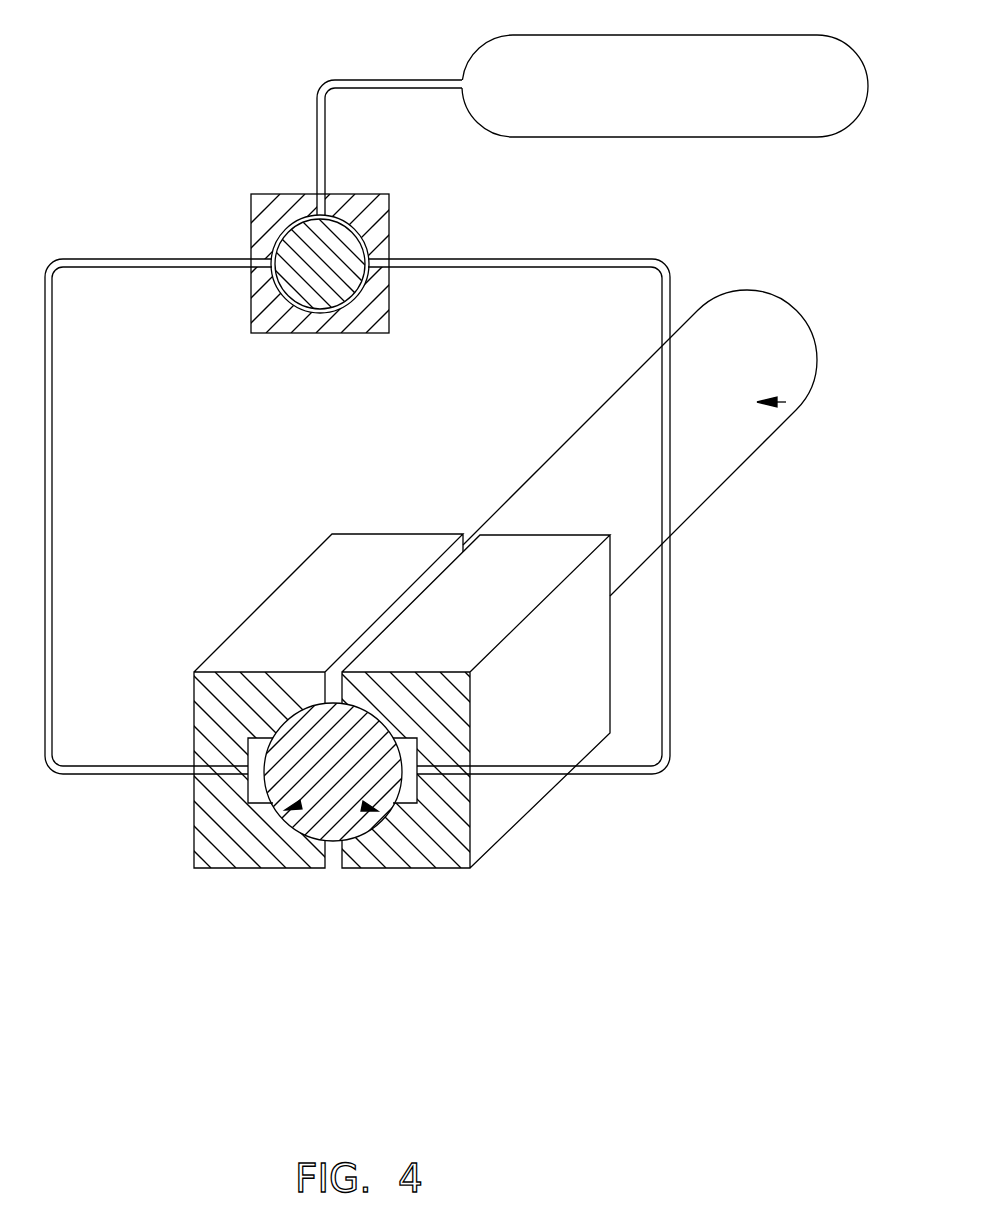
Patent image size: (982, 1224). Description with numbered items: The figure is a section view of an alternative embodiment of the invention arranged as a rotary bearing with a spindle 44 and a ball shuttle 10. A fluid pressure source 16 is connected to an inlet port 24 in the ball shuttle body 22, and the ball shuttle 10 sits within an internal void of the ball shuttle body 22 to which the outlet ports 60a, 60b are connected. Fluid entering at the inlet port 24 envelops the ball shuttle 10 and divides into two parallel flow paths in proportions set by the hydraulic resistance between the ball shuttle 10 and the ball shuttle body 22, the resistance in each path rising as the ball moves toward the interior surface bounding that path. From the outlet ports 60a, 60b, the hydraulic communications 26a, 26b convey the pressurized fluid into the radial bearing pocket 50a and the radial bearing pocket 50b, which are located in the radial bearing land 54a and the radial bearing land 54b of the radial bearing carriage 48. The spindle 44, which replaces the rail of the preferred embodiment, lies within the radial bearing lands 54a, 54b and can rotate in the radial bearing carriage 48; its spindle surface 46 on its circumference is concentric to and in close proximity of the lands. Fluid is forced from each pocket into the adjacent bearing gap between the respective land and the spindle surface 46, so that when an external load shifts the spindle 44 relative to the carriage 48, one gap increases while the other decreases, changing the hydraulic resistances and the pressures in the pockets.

The ball shuttle 10 is at (320, 312).
The fluid pressure source 16 is at (477, 43).
The ball shuttle body 22 is at (252, 308).
The inlet port 24 is at (317, 196).
The hydraulic communication 26a is at (670, 590).
The hydraulic communication 26b is at (52, 512).
The spindle 44 is at (797, 310).
The spindle surface 46 is at (784, 403).
The radial bearing carriage 48 is at (343, 602).
The radial bearing pocket 50a is at (252, 785).
The radial bearing pocket 50b is at (408, 775).
The radial bearing land 54a is at (300, 805).
The radial bearing land 54b is at (364, 806).
The outlet port 60a is at (389, 260).
The outlet port 60b is at (251, 260).